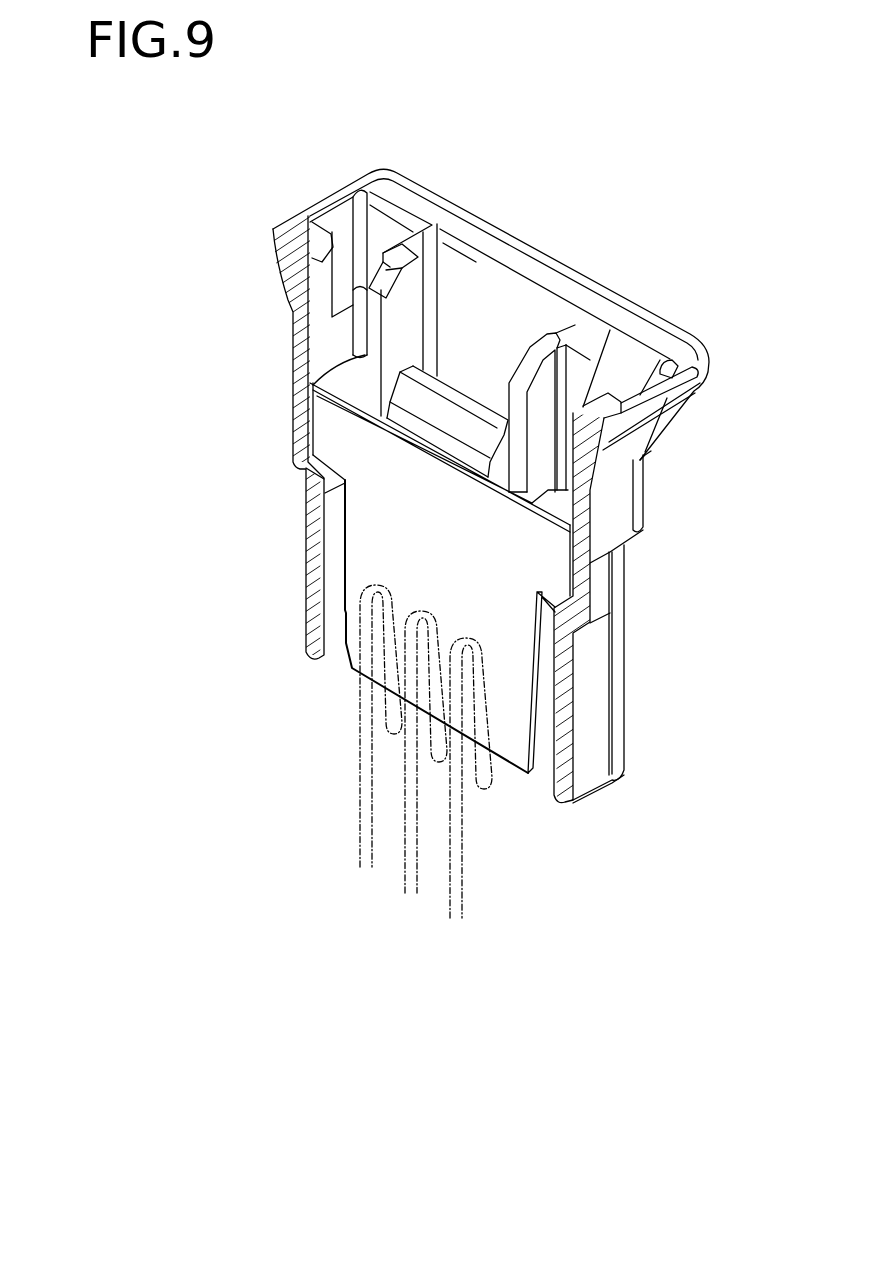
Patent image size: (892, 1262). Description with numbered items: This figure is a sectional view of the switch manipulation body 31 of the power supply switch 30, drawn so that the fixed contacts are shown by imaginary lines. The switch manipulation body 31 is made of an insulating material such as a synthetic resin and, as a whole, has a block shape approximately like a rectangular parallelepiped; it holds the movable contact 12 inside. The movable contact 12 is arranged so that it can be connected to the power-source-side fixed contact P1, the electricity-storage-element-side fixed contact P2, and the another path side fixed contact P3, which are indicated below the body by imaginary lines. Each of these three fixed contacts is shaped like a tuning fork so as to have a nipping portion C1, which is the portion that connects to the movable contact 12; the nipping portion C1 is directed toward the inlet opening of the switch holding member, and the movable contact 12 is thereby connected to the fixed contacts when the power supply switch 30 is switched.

The power supply switch 30 is at (529, 196).
The switch manipulation body 31 is at (290, 387).
The movable contact 12 is at (373, 528).
The nipping portion C1 is at (360, 625).
The power-source-side fixed contact P1 is at (360, 783).
The electricity-storage-element-side fixed contact P2 is at (452, 897).
The another path side fixed contact P3 is at (407, 843).